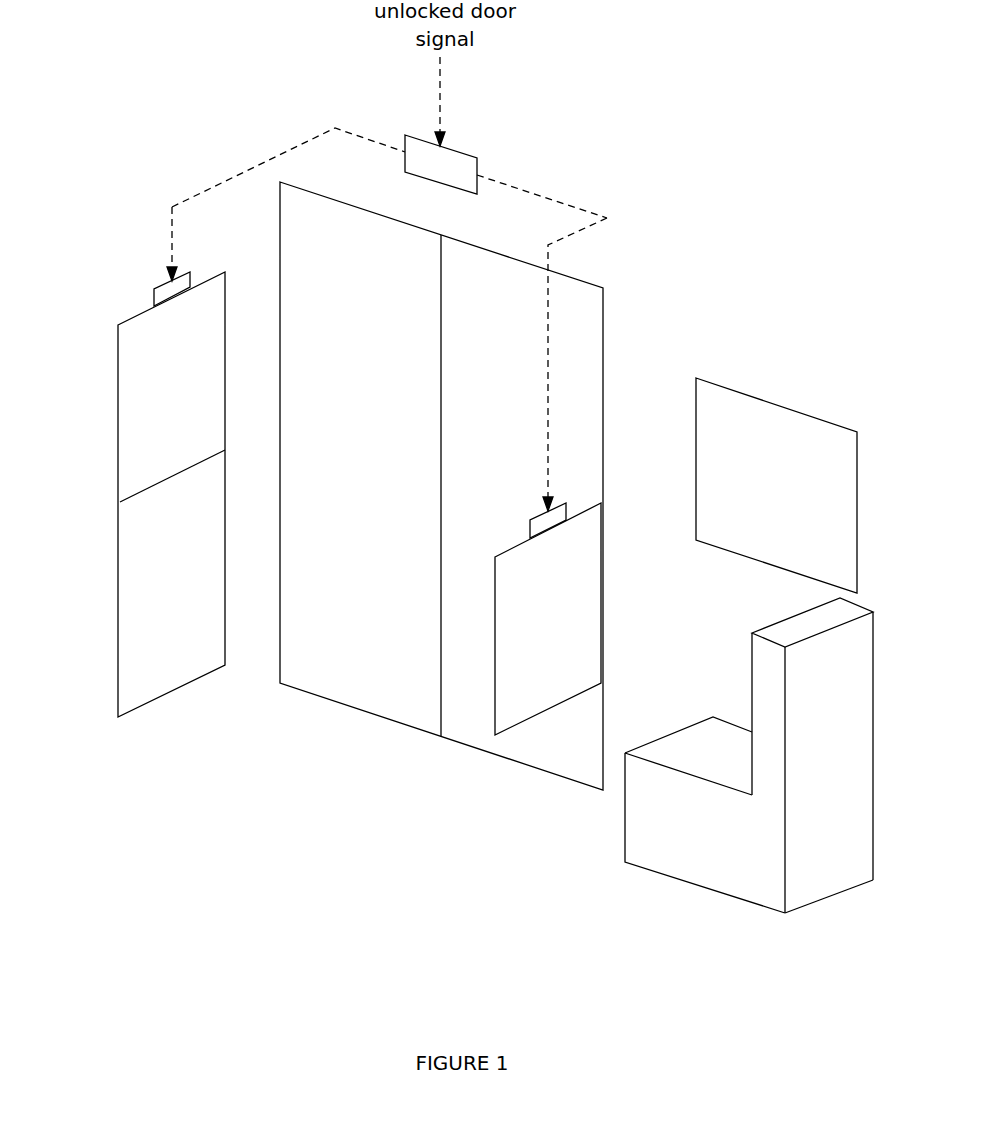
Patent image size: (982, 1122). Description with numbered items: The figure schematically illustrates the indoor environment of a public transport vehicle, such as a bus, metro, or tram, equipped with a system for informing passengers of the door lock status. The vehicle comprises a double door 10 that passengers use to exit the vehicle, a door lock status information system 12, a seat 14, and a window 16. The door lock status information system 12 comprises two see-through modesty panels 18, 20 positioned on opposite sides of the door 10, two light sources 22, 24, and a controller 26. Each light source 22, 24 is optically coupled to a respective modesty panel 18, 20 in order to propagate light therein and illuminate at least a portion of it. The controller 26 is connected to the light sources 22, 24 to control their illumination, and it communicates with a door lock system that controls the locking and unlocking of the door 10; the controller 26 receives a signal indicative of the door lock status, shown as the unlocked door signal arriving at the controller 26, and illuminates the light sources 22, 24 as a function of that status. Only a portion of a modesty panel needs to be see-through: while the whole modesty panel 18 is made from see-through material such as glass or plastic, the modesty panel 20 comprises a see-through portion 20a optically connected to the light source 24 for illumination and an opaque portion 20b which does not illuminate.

The double door 10 is at (357, 682).
The door lock status information system 12 is at (670, 153).
The seat 14 is at (748, 878).
The window 16 is at (750, 432).
The see-through modesty panel 18 is at (585, 632).
The see-through modesty panel 20 is at (121, 321).
The see-through portion 20a is at (159, 416).
The opaque portion 20b is at (178, 594).
The light source 22 is at (553, 523).
The light source 24 is at (157, 288).
The controller 26 is at (445, 163).